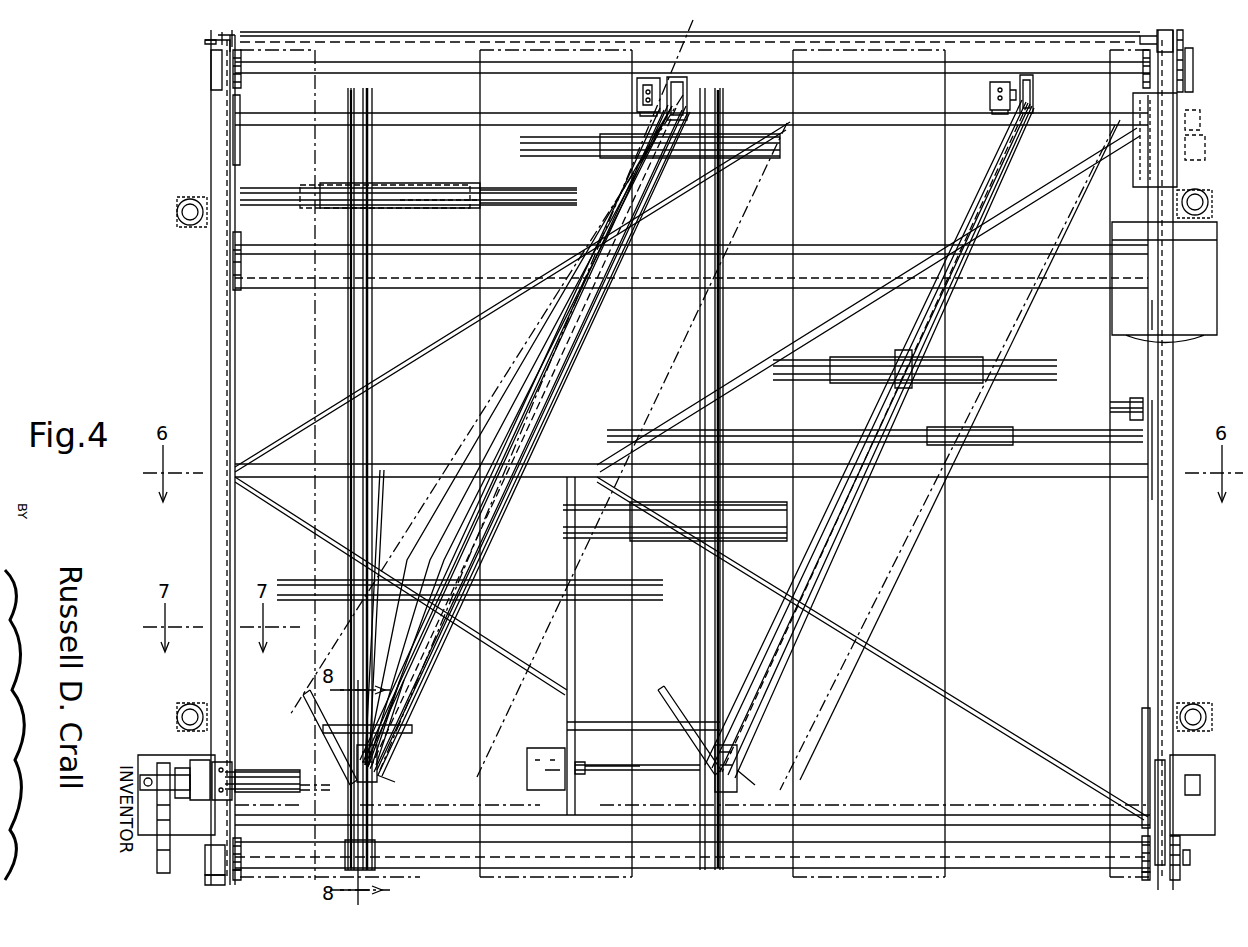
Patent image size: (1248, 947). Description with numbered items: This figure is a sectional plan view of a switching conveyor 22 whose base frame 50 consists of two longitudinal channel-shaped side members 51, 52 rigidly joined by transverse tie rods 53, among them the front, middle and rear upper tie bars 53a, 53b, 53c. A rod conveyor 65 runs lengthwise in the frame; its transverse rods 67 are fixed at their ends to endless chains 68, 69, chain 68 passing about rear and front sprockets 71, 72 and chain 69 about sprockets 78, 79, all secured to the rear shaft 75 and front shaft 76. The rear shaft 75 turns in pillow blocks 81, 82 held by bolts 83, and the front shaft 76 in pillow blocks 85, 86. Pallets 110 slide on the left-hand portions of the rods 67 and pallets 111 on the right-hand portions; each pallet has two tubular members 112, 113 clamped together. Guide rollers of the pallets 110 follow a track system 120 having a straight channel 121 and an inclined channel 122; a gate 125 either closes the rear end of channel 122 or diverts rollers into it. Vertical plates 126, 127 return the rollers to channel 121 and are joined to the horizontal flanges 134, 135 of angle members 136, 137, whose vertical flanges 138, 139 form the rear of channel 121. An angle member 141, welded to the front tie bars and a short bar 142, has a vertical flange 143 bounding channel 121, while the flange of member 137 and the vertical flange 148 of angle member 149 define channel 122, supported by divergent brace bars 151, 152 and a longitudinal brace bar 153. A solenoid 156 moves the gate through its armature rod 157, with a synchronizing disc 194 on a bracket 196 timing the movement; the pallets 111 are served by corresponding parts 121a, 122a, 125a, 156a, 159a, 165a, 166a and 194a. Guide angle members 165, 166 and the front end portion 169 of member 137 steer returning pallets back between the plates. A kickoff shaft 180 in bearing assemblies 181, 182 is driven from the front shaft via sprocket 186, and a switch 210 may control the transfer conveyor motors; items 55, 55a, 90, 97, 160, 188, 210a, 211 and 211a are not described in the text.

The switching conveyor 22 is at (160, 72).
The base frame 50 is at (1176, 555).
The side member 51 is at (208, 360).
The side member 52 is at (1170, 522).
The tie rods 53 is at (1135, 32).
The front upper tie bar 53a is at (500, 112).
The middle upper tie bar 53b is at (1050, 477).
The rear upper tie bar 53c is at (905, 815).
The mounting ring 55 is at (1208, 190).
The lower mounting ring 55a is at (1205, 700).
The rod conveyor 65 is at (240, 152).
The rods 67 is at (505, 183).
The endless chain 68 is at (242, 843).
The endless chain 69 is at (1142, 838).
The rear sprocket 71 is at (244, 876).
The front sprocket 72 is at (243, 74).
The rear shaft 75 is at (530, 860).
The front shaft 76 is at (405, 70).
The sprocket 78 is at (1142, 878).
The sprocket 79 is at (1142, 72).
The pillow block 81 is at (205, 875).
The pillow block 82 is at (1165, 878).
The bolts 83 is at (205, 850).
The pillow block 85 is at (212, 55).
The pillow block 86 is at (1190, 56).
The guide plate 90 is at (245, 137).
The bracket 97 is at (240, 320).
The pallets 110 is at (405, 183).
The pallets 111 is at (960, 356).
The tubular member 112 is at (460, 183).
The tubular member 113 is at (457, 205).
The track system 120 is at (340, 368).
The channel 121 is at (362, 440).
The channel 121a is at (718, 345).
The channel 122 is at (547, 422).
The channel 122a is at (945, 313).
The gate 125 is at (380, 768).
The gate 125a is at (742, 770).
The vertical plate 126 is at (348, 848).
The vertical plate 127 is at (370, 848).
The horizontal flange 134 is at (350, 790).
The horizontal flange 135 is at (380, 785).
The angle member 136 is at (340, 620).
The angle member 137 is at (420, 693).
The vertical flange 138 is at (360, 580).
The vertical flange 139 is at (395, 748).
The angle member 141 is at (378, 522).
The short bar 142 is at (320, 728).
The vertical flange 143 is at (362, 493).
The vertical flange 148 is at (552, 358).
The angle member 149 is at (505, 425).
The brace bar 151 is at (282, 505).
The brace bar 152 is at (425, 350).
The longitudinal brace bar 153 is at (577, 660).
The solenoid 156 is at (195, 760).
The solenoid 156a is at (525, 760).
The armature rod 157 is at (288, 772).
The lug 159a is at (580, 762).
The rod 160 is at (583, 775).
The guide angle member 165 is at (305, 698).
The guide angle member 165a is at (663, 688).
The guide angle member 166 is at (592, 332).
The guide angle member 166a is at (1020, 310).
The front end portion 169 is at (685, 60).
The kickoff shaft 180 is at (835, 36).
The bearing assembly 181 is at (216, 36).
The bearing assembly 182 is at (1170, 30).
The sprocket 186 is at (1190, 70).
The sprocket 188 is at (1182, 36).
The synchronizing disc 194 is at (1150, 765).
The synchronizing disc 194a is at (175, 768).
The bracket 196 is at (1195, 795).
The switch 210 is at (636, 92).
The right pivot block 210a is at (990, 95).
The left pivot bracket 211 is at (672, 84).
The right pivot bracket 211a is at (1035, 84).